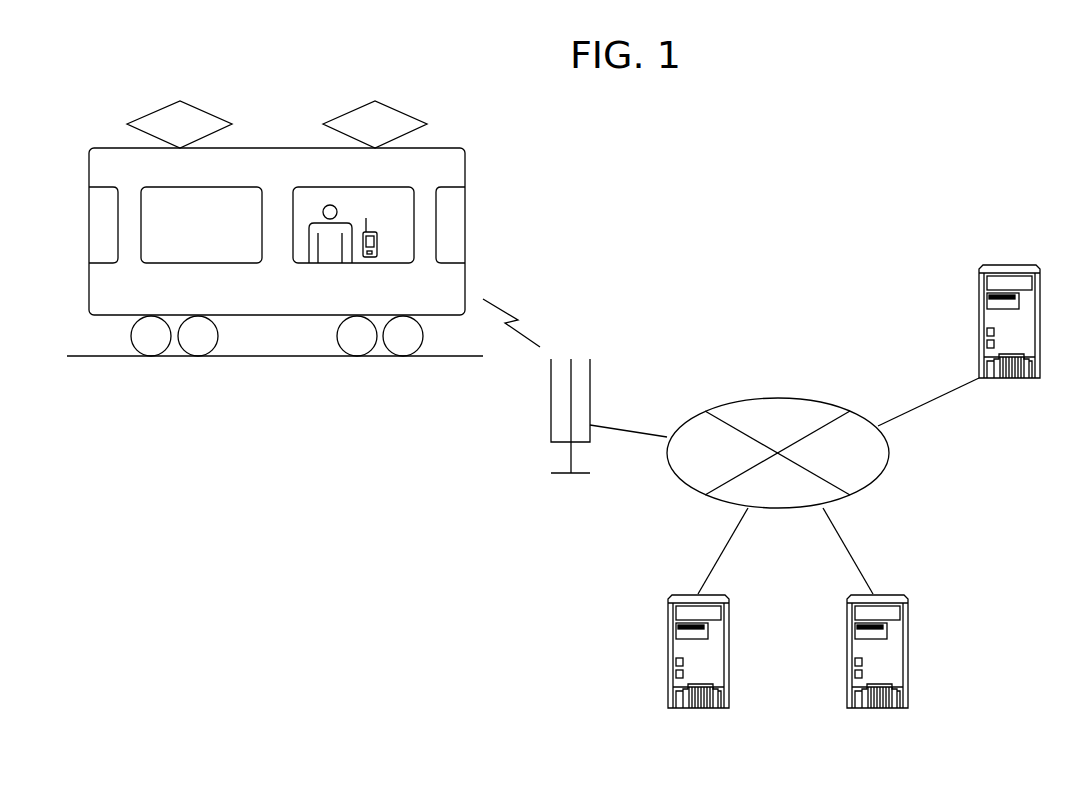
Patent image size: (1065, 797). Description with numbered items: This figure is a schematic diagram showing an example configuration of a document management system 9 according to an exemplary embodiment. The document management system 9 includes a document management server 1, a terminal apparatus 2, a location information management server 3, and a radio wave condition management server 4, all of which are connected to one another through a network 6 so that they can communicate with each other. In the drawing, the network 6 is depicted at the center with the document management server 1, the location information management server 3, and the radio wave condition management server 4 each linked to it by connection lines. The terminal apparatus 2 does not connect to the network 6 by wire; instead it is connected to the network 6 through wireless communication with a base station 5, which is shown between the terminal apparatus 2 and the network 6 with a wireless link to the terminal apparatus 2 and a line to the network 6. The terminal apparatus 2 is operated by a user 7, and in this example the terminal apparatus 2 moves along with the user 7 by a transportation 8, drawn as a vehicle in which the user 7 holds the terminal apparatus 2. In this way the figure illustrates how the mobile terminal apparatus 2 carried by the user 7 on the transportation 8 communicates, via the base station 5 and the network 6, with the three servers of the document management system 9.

The document management server 1 is at (1008, 265).
The terminal apparatus 2 is at (377, 243).
The location information management server 3 is at (700, 709).
The radio wave condition management server 4 is at (877, 709).
The base station 5 is at (590, 394).
The network 6 is at (782, 398).
The user 7 is at (325, 263).
The transportation 8 is at (465, 169).
The document management system 9 is at (922, 112).